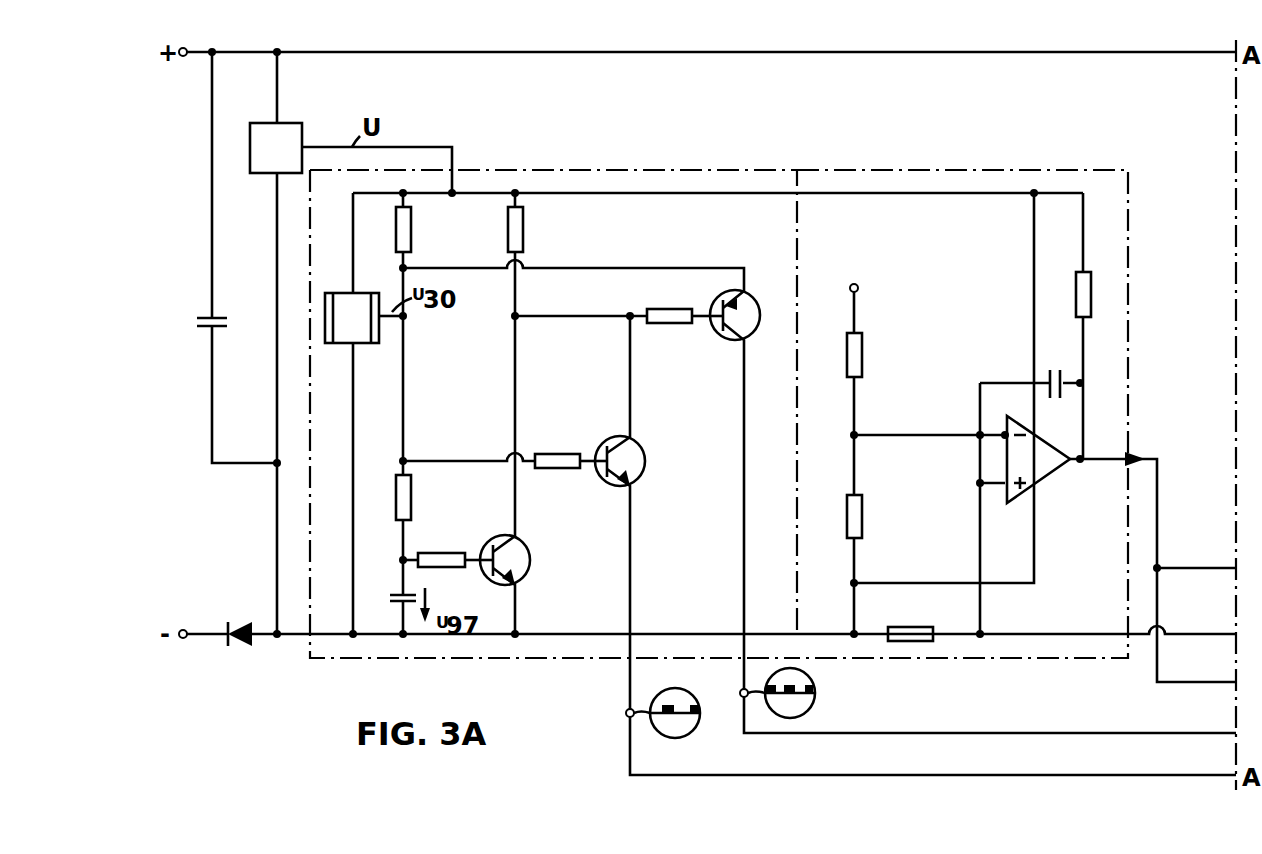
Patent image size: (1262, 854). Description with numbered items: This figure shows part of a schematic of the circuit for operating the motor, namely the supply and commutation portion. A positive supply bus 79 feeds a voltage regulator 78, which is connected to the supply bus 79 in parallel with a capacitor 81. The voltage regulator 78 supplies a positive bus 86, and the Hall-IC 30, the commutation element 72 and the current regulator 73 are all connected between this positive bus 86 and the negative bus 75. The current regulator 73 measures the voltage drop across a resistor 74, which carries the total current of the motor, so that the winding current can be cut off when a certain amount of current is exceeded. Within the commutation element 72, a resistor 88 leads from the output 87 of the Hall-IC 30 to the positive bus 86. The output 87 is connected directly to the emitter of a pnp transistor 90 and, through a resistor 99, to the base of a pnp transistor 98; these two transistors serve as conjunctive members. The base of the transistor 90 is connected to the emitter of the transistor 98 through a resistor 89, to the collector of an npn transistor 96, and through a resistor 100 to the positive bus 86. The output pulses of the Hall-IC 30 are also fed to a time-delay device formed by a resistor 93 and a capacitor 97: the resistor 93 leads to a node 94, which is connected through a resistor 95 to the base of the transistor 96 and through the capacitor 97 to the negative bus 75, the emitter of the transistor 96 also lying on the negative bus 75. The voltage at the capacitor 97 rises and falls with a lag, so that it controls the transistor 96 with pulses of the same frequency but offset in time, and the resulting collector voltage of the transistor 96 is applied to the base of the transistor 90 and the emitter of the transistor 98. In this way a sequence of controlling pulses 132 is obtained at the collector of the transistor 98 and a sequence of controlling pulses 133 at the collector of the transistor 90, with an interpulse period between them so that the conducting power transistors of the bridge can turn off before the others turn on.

The positive supply bus 79 is at (583, 54).
The voltage regulator 78 is at (285, 135).
The capacitor 81 is at (229, 322).
The commutation element 72 is at (615, 169).
The current regulator 73 is at (910, 167).
The positive bus 86 is at (605, 195).
The resistor 88 is at (408, 230).
The resistor 100 is at (520, 232).
The Hall-IC 30 is at (340, 292).
The output 87 is at (405, 320).
The resistor 89 is at (668, 323).
The pnp transistor 90 is at (752, 300).
The resistor 93 is at (408, 493).
The node 94 is at (405, 557).
The resistor 95 is at (448, 567).
The npn transistor 96 is at (530, 555).
The capacitor 97 is at (398, 596).
The pnp transistor 98 is at (646, 461).
The resistor 99 is at (560, 454).
The negative bus 75 is at (660, 633).
The resistor 74 is at (908, 627).
The controlling pulses 132 is at (668, 706).
The controlling pulses 133 is at (790, 686).